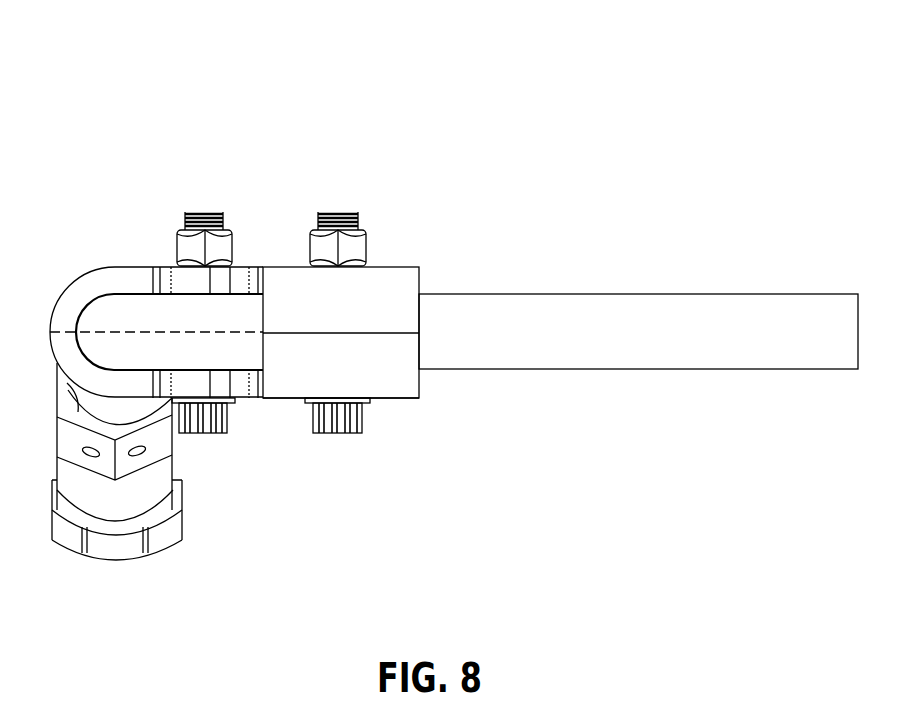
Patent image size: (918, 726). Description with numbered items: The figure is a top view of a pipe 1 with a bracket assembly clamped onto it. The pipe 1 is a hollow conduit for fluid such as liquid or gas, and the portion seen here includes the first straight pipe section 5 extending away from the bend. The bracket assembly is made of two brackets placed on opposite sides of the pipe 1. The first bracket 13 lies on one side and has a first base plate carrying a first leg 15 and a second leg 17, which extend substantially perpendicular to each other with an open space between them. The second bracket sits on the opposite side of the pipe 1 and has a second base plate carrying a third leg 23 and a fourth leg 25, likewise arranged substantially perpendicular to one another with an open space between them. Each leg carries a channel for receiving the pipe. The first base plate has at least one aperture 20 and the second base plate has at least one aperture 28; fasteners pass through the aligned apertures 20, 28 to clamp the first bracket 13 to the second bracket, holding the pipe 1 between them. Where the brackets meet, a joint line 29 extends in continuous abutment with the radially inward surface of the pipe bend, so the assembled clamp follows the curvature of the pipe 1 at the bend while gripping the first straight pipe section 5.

The pipe 1 is at (658, 195).
The first straight pipe section 5 is at (735, 280).
The first bracket 13 is at (62, 253).
The first leg 15 is at (396, 264).
The second leg 17 is at (127, 260).
The aperture 20 is at (308, 218).
The third leg 23 is at (290, 399).
The fourth leg 25 is at (72, 372).
The aperture 28 is at (327, 440).
The joint line 29 is at (190, 327).